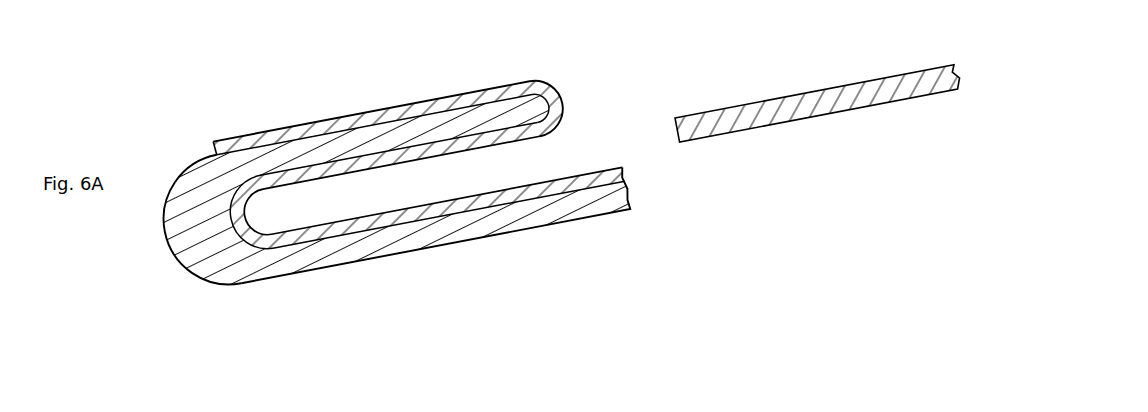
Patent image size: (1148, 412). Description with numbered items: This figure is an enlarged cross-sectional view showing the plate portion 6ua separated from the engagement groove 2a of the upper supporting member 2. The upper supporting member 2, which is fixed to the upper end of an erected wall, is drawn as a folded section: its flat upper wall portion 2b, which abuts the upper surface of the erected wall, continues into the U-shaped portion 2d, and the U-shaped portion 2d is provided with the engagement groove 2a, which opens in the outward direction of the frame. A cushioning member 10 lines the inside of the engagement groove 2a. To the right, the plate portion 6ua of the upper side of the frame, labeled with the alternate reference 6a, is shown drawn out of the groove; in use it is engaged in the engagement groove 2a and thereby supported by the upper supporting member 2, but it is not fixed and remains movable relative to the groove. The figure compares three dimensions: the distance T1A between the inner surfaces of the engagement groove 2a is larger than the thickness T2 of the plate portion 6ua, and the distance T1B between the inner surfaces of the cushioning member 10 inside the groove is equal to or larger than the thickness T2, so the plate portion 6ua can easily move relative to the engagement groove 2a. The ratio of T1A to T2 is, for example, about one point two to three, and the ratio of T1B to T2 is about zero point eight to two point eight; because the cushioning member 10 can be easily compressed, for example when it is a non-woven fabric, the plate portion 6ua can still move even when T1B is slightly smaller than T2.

The upper supporting member 2 is at (374, 213).
The engagement groove 2a is at (292, 228).
The upper wall portion 2b is at (596, 214).
The U-shaped portion 2d is at (203, 152).
The cushioning member 10 is at (258, 138).
The plate portion 6ua is at (817, 81).
The wall 6a is at (745, 117).
The distance between the inner surfaces in the engagement groove T1A is at (353, 158).
The distance between the inner surfaces of the cushioning member T1B is at (412, 163).
The thickness of the plate portion T2 is at (679, 143).